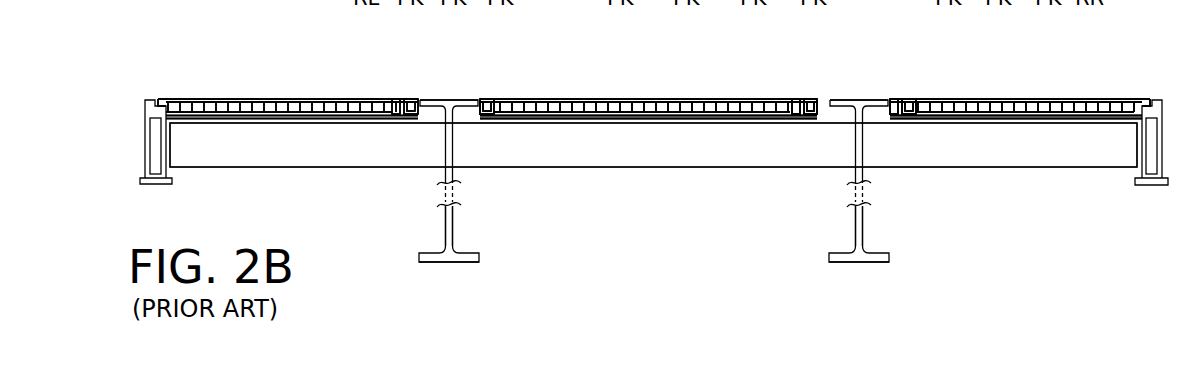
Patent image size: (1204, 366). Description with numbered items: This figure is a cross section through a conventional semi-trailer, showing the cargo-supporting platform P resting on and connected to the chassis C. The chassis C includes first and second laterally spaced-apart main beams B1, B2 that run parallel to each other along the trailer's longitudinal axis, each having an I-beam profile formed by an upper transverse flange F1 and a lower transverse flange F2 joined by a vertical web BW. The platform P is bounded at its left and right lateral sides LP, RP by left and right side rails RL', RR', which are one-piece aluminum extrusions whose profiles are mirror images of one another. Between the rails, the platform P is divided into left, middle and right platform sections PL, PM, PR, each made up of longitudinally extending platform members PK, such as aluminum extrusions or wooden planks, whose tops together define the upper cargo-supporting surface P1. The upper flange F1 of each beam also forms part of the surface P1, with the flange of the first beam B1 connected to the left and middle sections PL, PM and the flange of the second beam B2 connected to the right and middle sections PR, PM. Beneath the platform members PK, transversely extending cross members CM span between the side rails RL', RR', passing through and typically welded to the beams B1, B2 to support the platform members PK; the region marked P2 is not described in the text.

The left lateral side LP is at (180, 92).
The left platform section PL is at (300, 95).
The middle platform section PM is at (585, 95).
The cargo-supporting platform P is at (643, 95).
The upper cargo-supporting surface P1 is at (803, 95).
The second panel P2 is at (1043, 177).
The right platform section PR is at (1030, 95).
The right lateral side RP is at (1118, 95).
The platform member PK is at (222, 110).
The cross member CM is at (323, 142).
The chassis C is at (707, 188).
The first main beam B1 is at (453, 228).
The second main beam B2 is at (856, 228).
The vertical web BW is at (446, 228).
The upper transverse flange F1 is at (446, 100).
The lower transverse flange F2 is at (450, 262).
The left side rail RL' is at (128, 162).
The right side rail RR' is at (1122, 180).